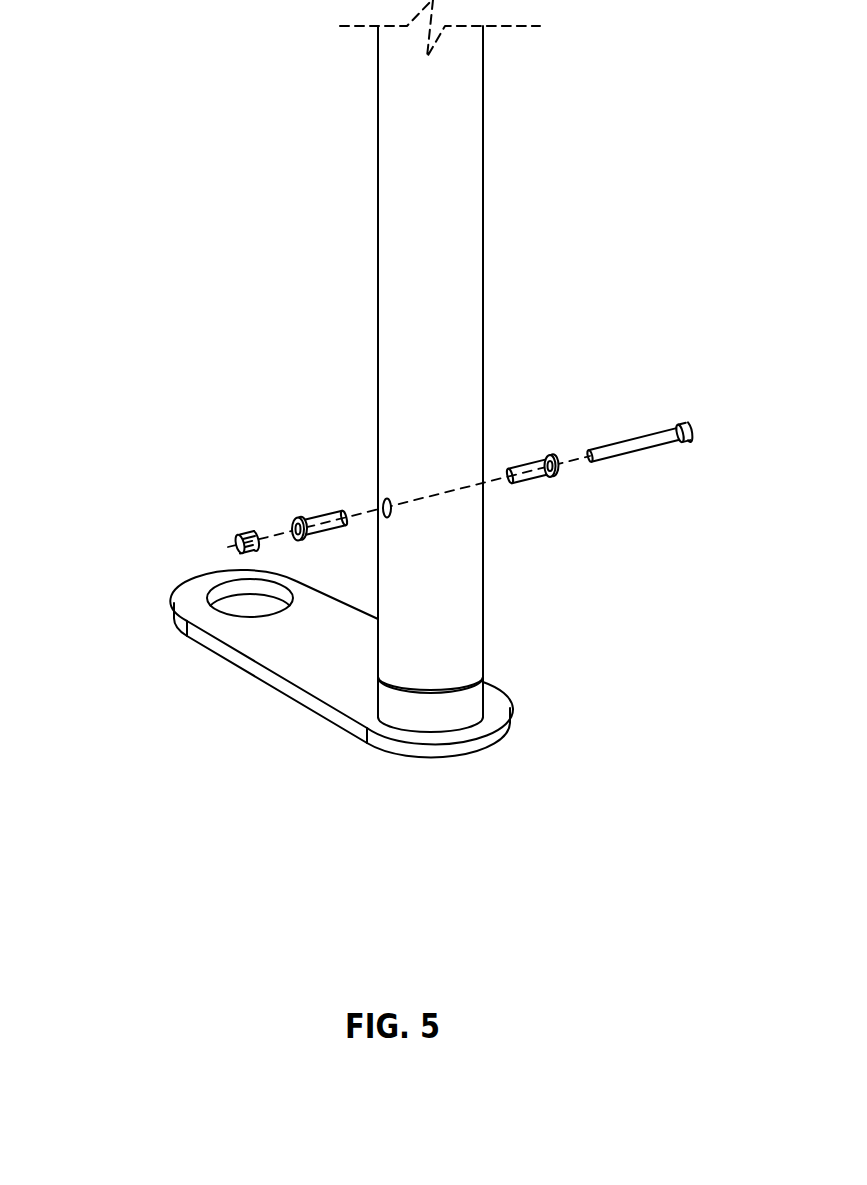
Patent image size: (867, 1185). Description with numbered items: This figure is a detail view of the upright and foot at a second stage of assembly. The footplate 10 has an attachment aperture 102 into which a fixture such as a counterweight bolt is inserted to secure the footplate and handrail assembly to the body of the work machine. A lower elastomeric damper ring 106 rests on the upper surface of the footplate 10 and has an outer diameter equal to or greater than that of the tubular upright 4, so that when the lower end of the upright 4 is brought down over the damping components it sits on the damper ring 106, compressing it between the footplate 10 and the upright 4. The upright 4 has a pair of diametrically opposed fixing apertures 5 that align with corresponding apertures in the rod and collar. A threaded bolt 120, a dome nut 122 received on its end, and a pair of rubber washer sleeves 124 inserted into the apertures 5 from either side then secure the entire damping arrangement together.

The tubular upright 4 is at (467, 308).
The fixing apertures 5 is at (387, 500).
The footplate 10 is at (477, 730).
The attachment aperture 102 is at (205, 600).
The lower elastomeric damper ring 106 is at (458, 702).
The threaded bolt 120 is at (638, 438).
The dome nut 122 is at (237, 540).
The rubber washer sleeves 124 is at (312, 517).